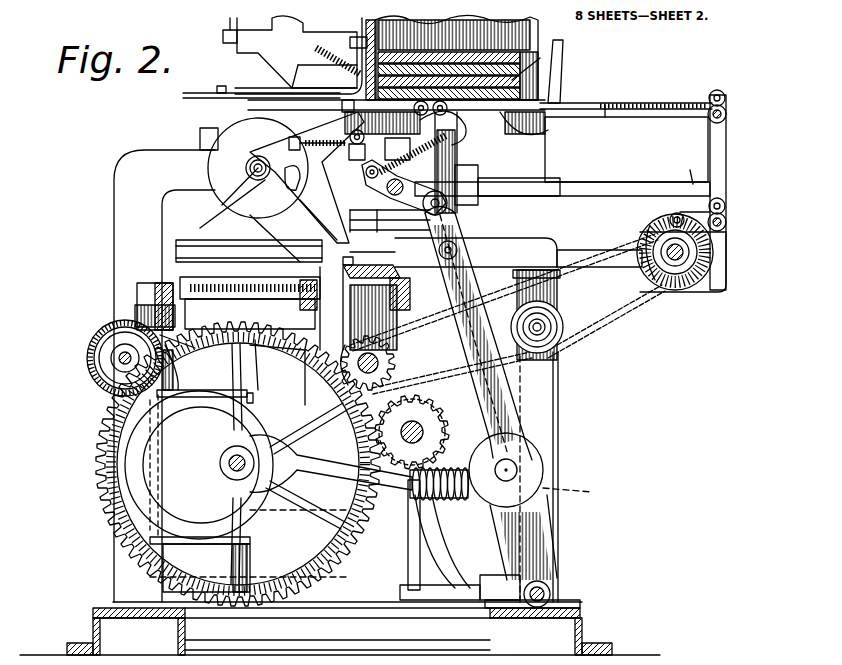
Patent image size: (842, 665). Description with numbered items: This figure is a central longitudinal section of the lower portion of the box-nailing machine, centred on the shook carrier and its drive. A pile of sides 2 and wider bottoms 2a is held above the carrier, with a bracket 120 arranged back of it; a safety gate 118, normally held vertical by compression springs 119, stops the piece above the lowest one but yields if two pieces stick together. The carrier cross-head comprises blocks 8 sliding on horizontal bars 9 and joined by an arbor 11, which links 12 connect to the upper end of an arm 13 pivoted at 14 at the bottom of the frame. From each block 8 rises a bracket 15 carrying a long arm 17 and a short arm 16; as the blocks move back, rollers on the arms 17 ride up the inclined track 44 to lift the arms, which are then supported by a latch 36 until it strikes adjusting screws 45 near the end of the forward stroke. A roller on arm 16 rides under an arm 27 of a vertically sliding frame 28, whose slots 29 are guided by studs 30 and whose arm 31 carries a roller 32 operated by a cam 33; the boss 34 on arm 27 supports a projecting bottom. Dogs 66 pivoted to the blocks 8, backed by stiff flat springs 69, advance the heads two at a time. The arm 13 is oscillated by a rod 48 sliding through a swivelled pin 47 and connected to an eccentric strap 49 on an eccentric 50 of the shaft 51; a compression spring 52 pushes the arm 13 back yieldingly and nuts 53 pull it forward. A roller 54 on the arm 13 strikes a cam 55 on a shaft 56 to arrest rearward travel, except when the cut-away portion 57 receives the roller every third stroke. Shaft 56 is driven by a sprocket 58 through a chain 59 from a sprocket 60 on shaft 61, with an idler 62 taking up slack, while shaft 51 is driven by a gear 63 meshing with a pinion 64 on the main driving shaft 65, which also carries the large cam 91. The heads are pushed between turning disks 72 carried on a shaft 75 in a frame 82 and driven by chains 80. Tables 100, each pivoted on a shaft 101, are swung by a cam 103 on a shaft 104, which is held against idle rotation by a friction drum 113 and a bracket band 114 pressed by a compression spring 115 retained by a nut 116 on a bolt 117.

The sides 2 is at (540, 60).
The bracket 120 is at (578, 45).
The bottoms 2a is at (562, 80).
The boss 34 is at (598, 88).
The safety gate 118 is at (345, 70).
The compression springs 119 is at (345, 50).
The short arm 16 is at (357, 109).
The long arm 17 is at (455, 130).
The track 44 is at (528, 135).
The bracket 15 is at (460, 151).
The flat spring 69 is at (397, 149).
The adjusting screws 45 is at (352, 150).
The arbor 11 is at (413, 158).
The links 12 is at (404, 187).
The blocks 8 is at (478, 172).
The arm 27 is at (614, 120).
The horizontal bars 9 is at (685, 174).
The vertically sliding frame 28 is at (727, 163).
The slots 29 is at (726, 99).
The studs 30 is at (727, 116).
The arm 31 is at (700, 214).
The roller 32 is at (670, 218).
The roller 54 is at (458, 242).
The cam 55 is at (695, 280).
The shaft 56 is at (690, 252).
The cam 33 is at (677, 275).
The sprocket 58 is at (660, 285).
The cut-away portion 57 is at (640, 278).
The chain 59 is at (600, 318).
The idler 62 is at (560, 345).
The arm 13 is at (491, 394).
The pivot 14 is at (548, 585).
The pin 47 is at (512, 465).
The nuts 53 is at (579, 492).
The sprocket 60 is at (385, 352).
The shaft 61 is at (380, 365).
The dogs 66 is at (396, 254).
The pinion 64 is at (445, 410).
The main driving shaft 65 is at (430, 435).
The gear 63 is at (98, 462).
The eccentric 50 is at (199, 465).
The eccentric strap 49 is at (175, 520).
The shaft 51 is at (228, 460).
The rod 48 is at (350, 468).
The compression spring 52 is at (440, 486).
The turning disks 72 is at (258, 168).
The latch 36 is at (310, 190).
The shaft 75 is at (240, 190).
The frame 82 is at (217, 211).
The chains 80 is at (262, 230).
The tables 100 is at (249, 253).
The compression spring 115 is at (158, 282).
The nut 116 is at (135, 318).
The cam 103 is at (90, 338).
The drum 113 is at (100, 352).
The bracket band 114 is at (92, 372).
The shaft 104 is at (120, 365).
The bolt 117 is at (180, 362).
The shaft 101 is at (271, 365).
The cam 91 is at (277, 375).